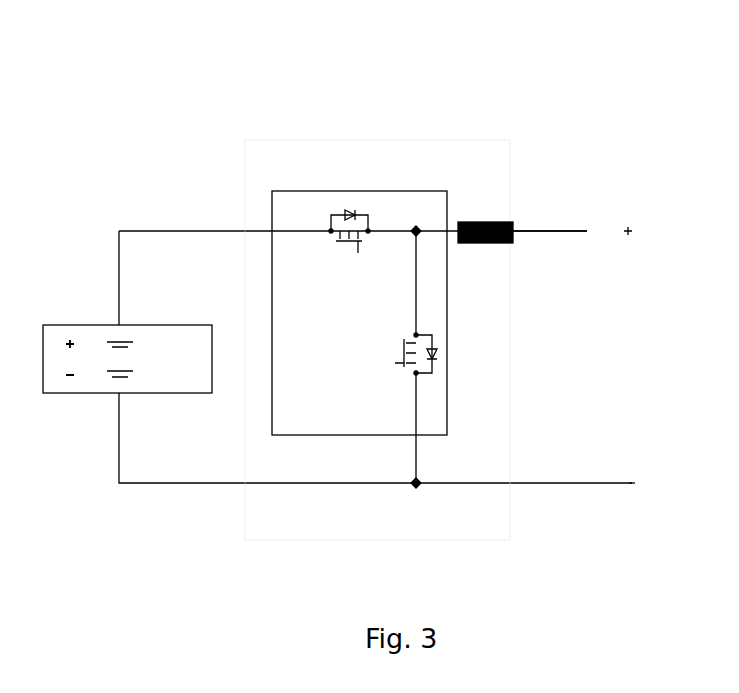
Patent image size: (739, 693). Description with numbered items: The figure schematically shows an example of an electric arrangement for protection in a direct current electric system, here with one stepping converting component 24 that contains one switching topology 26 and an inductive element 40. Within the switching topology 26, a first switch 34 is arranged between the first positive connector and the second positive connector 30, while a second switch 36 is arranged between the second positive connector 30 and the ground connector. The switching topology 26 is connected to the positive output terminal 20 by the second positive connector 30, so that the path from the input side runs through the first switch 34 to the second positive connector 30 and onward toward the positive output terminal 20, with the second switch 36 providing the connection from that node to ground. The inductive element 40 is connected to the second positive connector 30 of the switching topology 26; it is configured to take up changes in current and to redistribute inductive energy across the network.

The positive output terminal 20 is at (567, 230).
The stepping converting component 24 is at (267, 131).
The switching topology 26 is at (298, 191).
The second positive connector 30 is at (393, 230).
The first switch 34 is at (361, 208).
The second switch 36 is at (438, 337).
The inductive element 40 is at (500, 221).